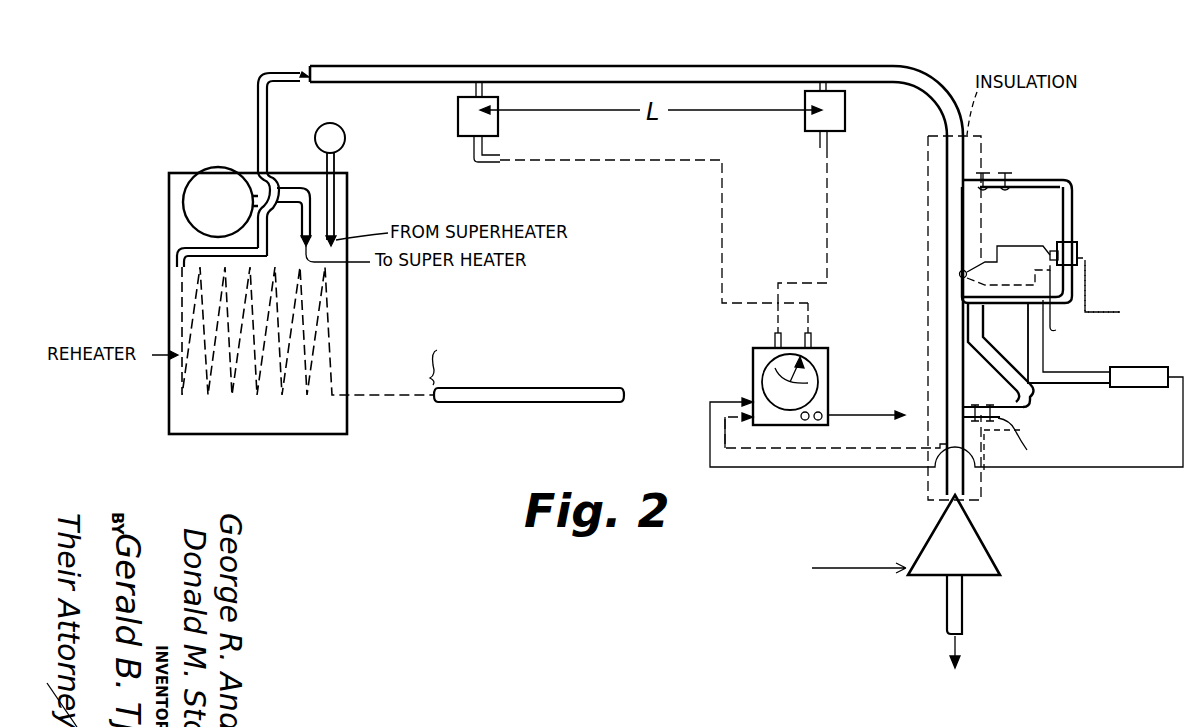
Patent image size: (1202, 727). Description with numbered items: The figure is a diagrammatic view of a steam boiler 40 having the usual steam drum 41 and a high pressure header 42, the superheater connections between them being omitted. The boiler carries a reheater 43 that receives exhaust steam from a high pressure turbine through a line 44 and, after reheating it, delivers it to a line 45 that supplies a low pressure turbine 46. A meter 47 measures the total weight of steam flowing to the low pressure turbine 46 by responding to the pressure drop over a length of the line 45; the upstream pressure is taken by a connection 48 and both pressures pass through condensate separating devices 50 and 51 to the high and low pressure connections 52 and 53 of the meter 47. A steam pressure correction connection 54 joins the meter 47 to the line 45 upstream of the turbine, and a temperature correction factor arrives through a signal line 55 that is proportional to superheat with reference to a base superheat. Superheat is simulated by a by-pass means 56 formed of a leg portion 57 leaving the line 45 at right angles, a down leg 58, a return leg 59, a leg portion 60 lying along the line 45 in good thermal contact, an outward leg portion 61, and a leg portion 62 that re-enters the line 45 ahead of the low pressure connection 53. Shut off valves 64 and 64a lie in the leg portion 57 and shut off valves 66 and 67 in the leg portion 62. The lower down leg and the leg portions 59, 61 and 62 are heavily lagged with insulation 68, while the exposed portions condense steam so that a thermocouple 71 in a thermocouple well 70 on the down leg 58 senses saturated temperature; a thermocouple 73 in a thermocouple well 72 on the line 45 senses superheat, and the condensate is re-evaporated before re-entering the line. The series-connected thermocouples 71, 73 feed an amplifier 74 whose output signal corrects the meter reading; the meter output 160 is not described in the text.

The boiler 40 is at (156, 244).
The steam drum 41 is at (232, 208).
The high pressure header 42 is at (342, 128).
The reheater 43 is at (182, 315).
The line 44 is at (548, 403).
The line 45 is at (708, 62).
The low pressure turbine 46 is at (983, 539).
The meter 47 is at (864, 392).
The connection 48 is at (728, 210).
The condensate separating device 50 is at (458, 124).
The condensate separating device 51 is at (845, 114).
The high pressure connection 52 is at (812, 337).
The low pressure connection 53 is at (776, 337).
The steam pressure correction connection 54 is at (885, 452).
The signal line 55 is at (1183, 432).
The means for simulating saturated and superheat temperatures 56 is at (1036, 221).
The leg portion 57 is at (1055, 179).
The down leg 58 is at (1073, 217).
The return leg 59 is at (1069, 307).
The leg portion 60 is at (968, 320).
The leg portion 61 is at (1032, 395).
The leg portion 62 is at (1029, 439).
The shut off valve 64 is at (986, 172).
The shut off valve 64a is at (1008, 172).
The shut off valve 66 is at (962, 413).
The shut off valve 67 is at (1003, 450).
The insulation 68 is at (1119, 295).
The thermocouple well 70 is at (1078, 248).
The thermocouple 71 is at (1050, 257).
The thermocouple well 72 is at (960, 278).
The thermocouple 73 is at (961, 264).
The amplifier 74 is at (1160, 367).
The output lead 160 is at (885, 412).